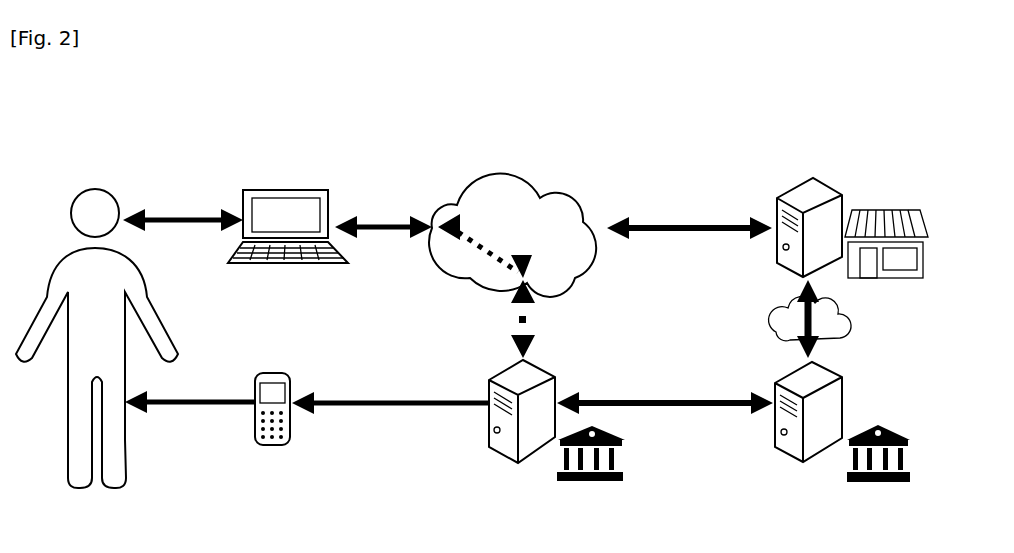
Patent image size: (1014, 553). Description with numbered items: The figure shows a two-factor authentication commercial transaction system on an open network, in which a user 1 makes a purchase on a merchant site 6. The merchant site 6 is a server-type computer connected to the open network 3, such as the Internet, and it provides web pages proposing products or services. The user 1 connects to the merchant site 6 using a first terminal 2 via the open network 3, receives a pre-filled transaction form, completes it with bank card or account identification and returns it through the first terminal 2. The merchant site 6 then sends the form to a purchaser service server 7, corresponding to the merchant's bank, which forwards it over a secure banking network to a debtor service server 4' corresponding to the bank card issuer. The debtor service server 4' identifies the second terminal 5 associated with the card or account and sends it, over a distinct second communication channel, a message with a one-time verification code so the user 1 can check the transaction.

The user 1 is at (98, 188).
The first terminal 2 is at (285, 190).
The open network 3 is at (503, 170).
The debtor service server 4' is at (557, 412).
The second terminal 5 is at (268, 448).
The merchant site 6 is at (812, 178).
The purchaser service server 7 is at (803, 462).